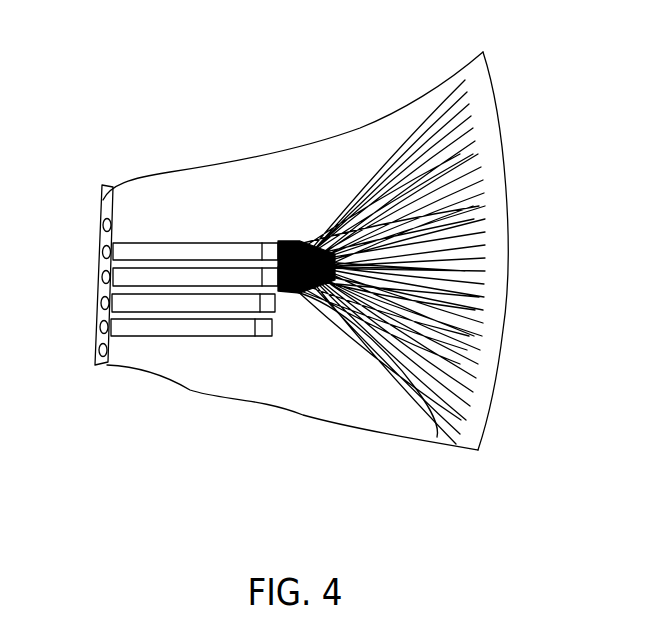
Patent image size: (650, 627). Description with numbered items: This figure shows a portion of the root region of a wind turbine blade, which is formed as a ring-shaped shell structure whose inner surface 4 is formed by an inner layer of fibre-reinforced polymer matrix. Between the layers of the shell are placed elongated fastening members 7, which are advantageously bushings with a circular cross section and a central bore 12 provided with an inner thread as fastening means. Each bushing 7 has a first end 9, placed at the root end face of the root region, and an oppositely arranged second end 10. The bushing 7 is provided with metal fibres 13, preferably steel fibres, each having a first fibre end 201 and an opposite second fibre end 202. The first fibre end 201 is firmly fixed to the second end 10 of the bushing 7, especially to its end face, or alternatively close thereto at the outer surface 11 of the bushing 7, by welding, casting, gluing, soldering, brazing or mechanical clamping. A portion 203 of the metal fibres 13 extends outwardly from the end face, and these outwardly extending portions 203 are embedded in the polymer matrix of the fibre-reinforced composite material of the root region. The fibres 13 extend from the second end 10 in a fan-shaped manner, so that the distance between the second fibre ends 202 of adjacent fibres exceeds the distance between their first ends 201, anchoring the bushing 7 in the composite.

The inner surface 4 is at (78, 319).
The elongated fastening member 7 is at (194, 292).
The first end 9 is at (103, 240).
The second end 10 is at (278, 242).
The outer surface 11 is at (190, 337).
The central bore 12 is at (75, 285).
The metal fibres 13 is at (380, 324).
The first fibre end 201 is at (283, 242).
The second fibre end 202 is at (465, 75).
The outwardly extending portion 203 is at (402, 148).